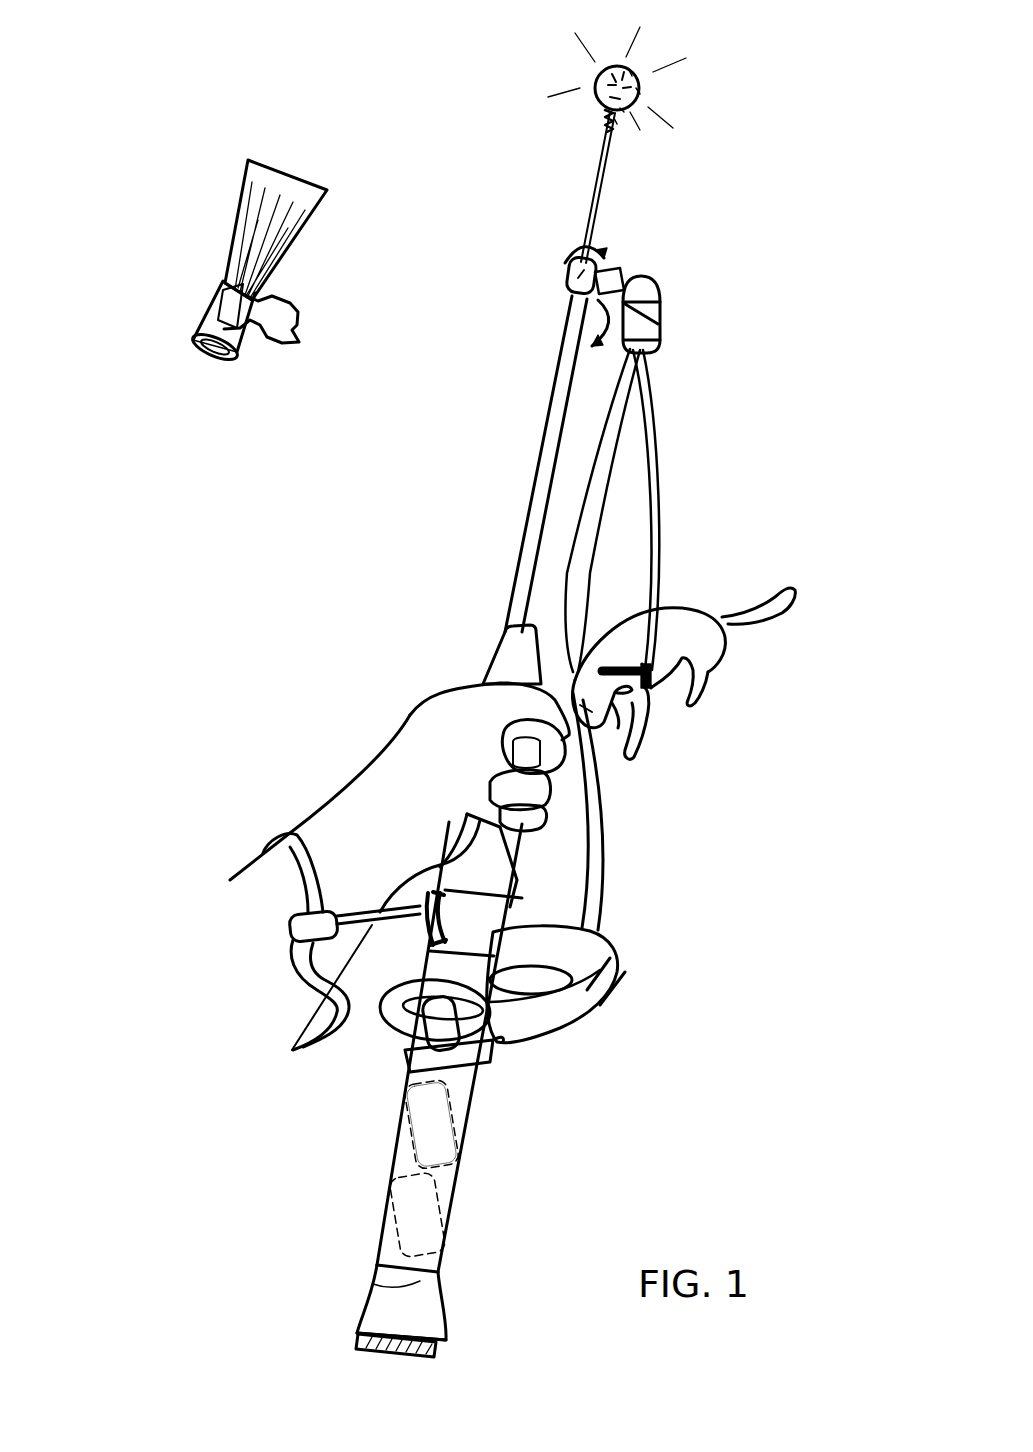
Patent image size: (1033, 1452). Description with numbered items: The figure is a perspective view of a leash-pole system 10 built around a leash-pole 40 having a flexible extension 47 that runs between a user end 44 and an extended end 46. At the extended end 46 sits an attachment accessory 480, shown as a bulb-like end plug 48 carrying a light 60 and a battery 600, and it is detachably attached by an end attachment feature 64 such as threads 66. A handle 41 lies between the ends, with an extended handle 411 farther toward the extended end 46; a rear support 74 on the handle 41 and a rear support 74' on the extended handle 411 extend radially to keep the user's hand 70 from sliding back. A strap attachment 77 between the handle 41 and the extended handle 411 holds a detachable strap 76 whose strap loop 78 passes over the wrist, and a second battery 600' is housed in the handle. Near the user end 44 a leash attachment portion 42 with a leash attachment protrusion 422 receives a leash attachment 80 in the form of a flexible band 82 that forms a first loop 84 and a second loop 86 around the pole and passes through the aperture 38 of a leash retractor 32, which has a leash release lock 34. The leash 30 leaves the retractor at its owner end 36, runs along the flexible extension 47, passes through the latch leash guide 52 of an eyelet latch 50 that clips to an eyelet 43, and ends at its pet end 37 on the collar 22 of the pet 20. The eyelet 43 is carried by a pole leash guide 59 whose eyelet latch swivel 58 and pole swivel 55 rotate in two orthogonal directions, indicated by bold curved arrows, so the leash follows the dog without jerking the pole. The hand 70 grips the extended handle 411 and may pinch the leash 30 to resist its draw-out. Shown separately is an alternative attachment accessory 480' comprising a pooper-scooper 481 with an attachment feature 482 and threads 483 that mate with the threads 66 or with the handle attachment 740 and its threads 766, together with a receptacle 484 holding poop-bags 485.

The leash-pole system 10 is at (367, 140).
The pet 20 is at (690, 608).
The collar 22 is at (654, 689).
The leash 30 is at (632, 437).
The leash retractor 32 is at (602, 944).
The leash release lock 34 is at (603, 1008).
The owner end 36 is at (601, 881).
The pet end 37 is at (626, 667).
The aperture 38 is at (527, 1013).
The leash-pole 40 is at (566, 341).
The handle 41 is at (384, 1241).
The leash attachment portion 42 is at (442, 1016).
The eyelet 43 is at (652, 283).
The user end 44 is at (375, 1281).
The extended end 46 is at (595, 102).
The flexible extension 47 is at (546, 479).
The end plug 48 is at (640, 82).
The eyelet latch 50 is at (661, 302).
The latch leash guide 52 is at (661, 333).
The pole swivel 55 is at (573, 253).
The eyelet latch swivel 58 is at (608, 278).
The pole leash guide 59 is at (567, 283).
The light 60 is at (641, 93).
The end attachment feature 64 is at (626, 110).
The threads 66 is at (618, 122).
The hand 70 is at (427, 738).
The rear support 74 is at (335, 1302).
The rear support 74' is at (593, 815).
The strap 76 is at (343, 906).
The strap attachment 77 is at (437, 893).
The strap loop 78 is at (295, 833).
The leash attachment 80 is at (472, 1063).
The flexible band 82 is at (485, 1052).
The first loop 84 is at (380, 995).
The second loop 86 is at (386, 1060).
The extended handle 411 is at (500, 651).
The leash attachment protrusion 422 is at (470, 977).
The attachment accessory 480 is at (644, 67).
The attachment accessory 480' is at (305, 230).
The pooper-scooper 481 is at (285, 263).
The attachment feature 482 is at (242, 353).
The threads 483 is at (200, 356).
The receptacle 484 is at (215, 317).
The poop-bags 485 is at (301, 334).
The battery 600 is at (543, 126).
The battery 600' is at (340, 1129).
The handle attachment 740 is at (441, 1349).
The threads 766 is at (400, 1358).